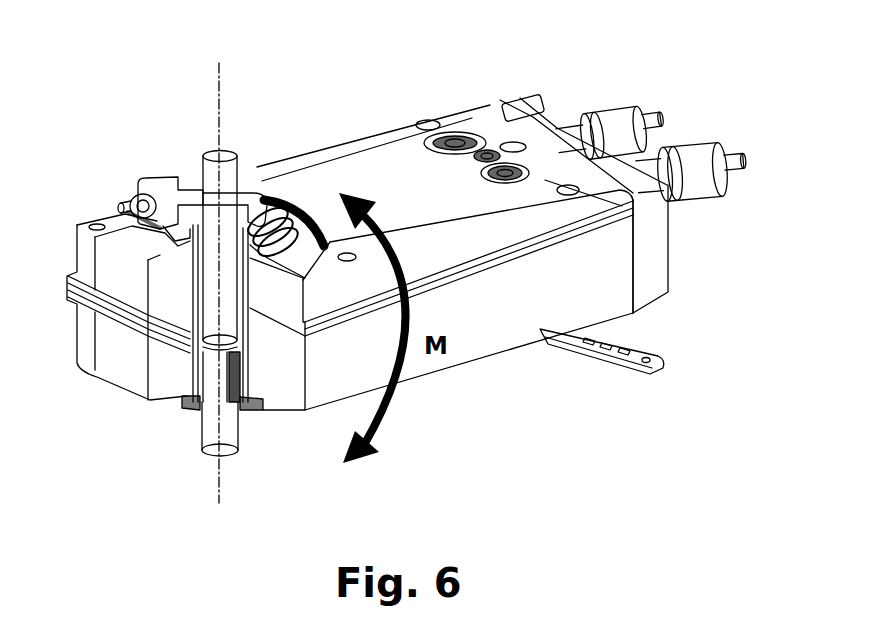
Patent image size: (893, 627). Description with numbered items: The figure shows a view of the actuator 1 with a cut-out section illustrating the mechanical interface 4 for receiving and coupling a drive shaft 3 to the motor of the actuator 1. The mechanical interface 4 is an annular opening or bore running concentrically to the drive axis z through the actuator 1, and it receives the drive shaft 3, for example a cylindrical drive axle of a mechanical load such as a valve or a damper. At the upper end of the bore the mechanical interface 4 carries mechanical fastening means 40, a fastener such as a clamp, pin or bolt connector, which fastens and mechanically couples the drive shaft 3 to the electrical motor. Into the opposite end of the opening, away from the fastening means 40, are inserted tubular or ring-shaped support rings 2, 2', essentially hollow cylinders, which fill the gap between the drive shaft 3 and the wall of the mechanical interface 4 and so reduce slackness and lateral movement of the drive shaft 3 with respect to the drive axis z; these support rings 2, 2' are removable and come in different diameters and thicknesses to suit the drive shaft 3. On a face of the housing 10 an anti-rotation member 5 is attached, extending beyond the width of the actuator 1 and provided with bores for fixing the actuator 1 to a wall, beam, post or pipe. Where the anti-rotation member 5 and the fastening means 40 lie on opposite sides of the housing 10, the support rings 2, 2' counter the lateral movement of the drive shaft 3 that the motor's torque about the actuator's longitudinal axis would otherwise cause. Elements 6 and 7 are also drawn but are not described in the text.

The actuator 1 is at (75, 422).
The support ring 2 is at (213, 367).
The support ring 2' is at (253, 430).
The drive shaft 3 is at (212, 150).
The mechanical interface 4 is at (273, 203).
The anti-rotation member 5 is at (650, 348).
The retaining strap 6 is at (655, 248).
The electrical connectors 7 is at (657, 122).
The housing 10 is at (507, 338).
The mechanical fastening means 40 is at (160, 187).
The drive axis Z is at (217, 83).